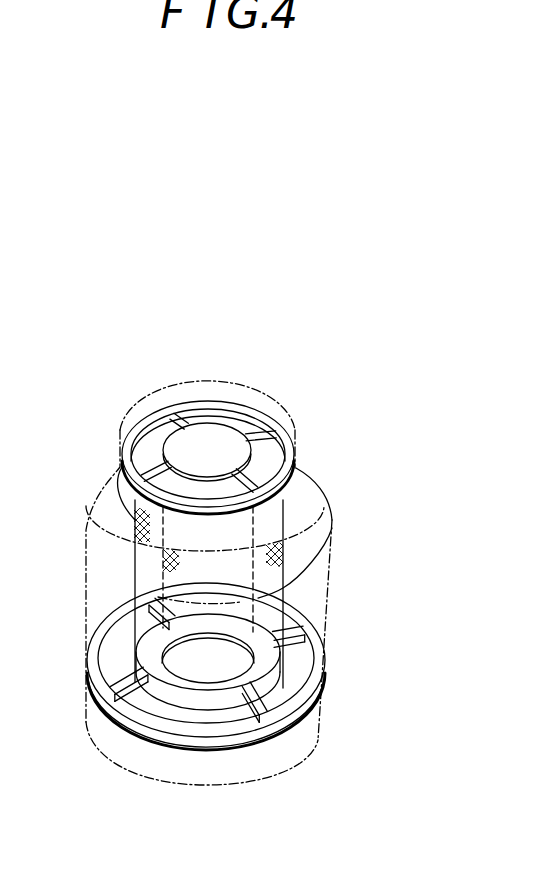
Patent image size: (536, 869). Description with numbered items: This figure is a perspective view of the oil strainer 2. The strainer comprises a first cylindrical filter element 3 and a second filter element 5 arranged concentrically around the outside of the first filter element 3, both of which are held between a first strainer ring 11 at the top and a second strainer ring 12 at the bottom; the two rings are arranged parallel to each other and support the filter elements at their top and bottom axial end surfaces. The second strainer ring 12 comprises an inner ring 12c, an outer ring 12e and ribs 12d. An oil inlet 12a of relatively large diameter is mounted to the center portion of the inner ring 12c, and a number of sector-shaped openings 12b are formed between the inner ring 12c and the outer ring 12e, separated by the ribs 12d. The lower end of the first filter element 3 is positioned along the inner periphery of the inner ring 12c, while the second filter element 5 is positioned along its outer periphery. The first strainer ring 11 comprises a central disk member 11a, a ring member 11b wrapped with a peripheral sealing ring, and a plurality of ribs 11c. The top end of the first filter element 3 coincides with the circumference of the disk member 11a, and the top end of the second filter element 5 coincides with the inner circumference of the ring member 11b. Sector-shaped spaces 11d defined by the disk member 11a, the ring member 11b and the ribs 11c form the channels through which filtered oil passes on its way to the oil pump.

The oil strainer 2 is at (360, 349).
The first cylindrical filter element 3 is at (186, 568).
The second filter element 5 is at (284, 527).
The first strainer ring 11 is at (189, 400).
The disk member 11a is at (213, 437).
The ring member 11b is at (122, 455).
The ribs 11c is at (274, 440).
The sector-shaped spaces 11d is at (153, 437).
The second strainer ring 12 is at (224, 691).
The oil inlet 12a is at (216, 652).
The sector-shaped openings 12b is at (214, 725).
The inner ring 12c is at (223, 622).
The rib 12d is at (313, 720).
The outer ring 12e is at (88, 678).